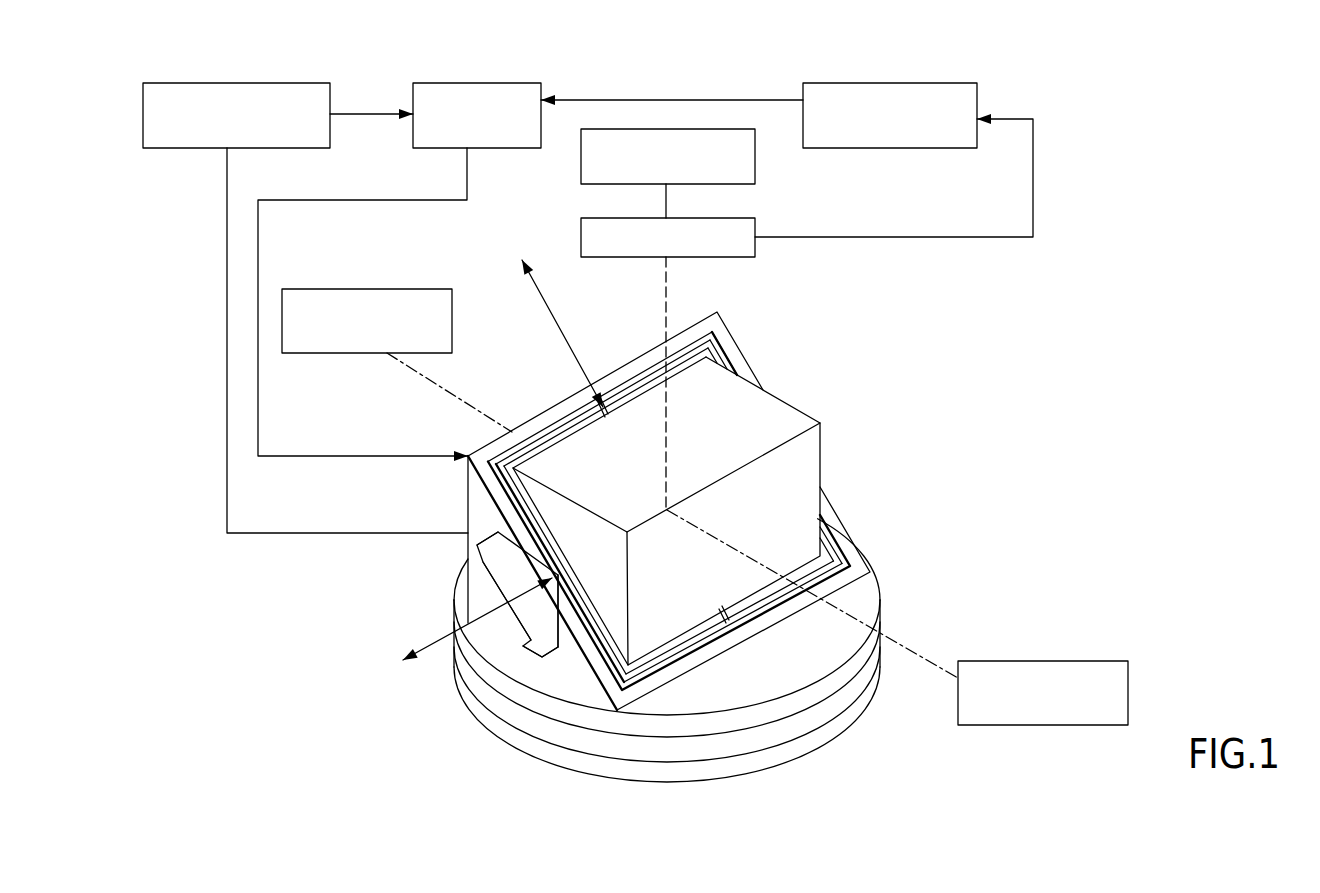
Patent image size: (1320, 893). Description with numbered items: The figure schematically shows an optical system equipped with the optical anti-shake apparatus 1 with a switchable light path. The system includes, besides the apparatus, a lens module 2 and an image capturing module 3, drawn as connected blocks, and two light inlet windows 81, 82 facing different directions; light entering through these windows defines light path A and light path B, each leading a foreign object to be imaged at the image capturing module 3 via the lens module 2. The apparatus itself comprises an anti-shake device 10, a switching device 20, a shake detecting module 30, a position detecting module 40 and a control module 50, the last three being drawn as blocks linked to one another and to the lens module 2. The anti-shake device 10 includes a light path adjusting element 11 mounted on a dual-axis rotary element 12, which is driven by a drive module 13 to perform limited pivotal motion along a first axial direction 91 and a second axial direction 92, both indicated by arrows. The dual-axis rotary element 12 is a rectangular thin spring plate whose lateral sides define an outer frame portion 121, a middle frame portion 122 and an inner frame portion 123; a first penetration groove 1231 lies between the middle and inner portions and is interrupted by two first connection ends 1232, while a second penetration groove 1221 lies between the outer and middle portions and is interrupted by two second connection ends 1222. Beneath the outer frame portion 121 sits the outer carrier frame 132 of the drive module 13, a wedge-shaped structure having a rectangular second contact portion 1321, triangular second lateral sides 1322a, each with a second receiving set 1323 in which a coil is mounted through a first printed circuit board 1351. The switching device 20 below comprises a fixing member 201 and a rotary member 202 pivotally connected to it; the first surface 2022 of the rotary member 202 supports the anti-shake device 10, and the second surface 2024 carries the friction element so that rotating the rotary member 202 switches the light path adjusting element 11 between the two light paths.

The optical anti-shake apparatus with a switchable light path 1 is at (843, 427).
The lens module 2 is at (755, 222).
The image capturing module 3 is at (755, 157).
The anti-shake device 10 is at (753, 352).
The light path adjusting element 11 is at (783, 407).
The dual-axis rotary element 12 is at (833, 510).
The drive module 13 is at (455, 500).
The switching device 20 is at (887, 563).
The shake detecting module 30 is at (912, 83).
The position detecting module 40 is at (290, 83).
The control module 50 is at (500, 83).
The light inlet window 81 is at (1050, 661).
The light inlet window 82 is at (330, 353).
The first axial direction 91 is at (543, 293).
The second axial direction 92 is at (445, 655).
The outer frame portion 121 is at (840, 577).
The middle frame portion 122 is at (837, 577).
The inner frame portion 123 is at (627, 708).
The outer carrier frame 132 is at (473, 597).
The fixing member 201 is at (823, 742).
The rotary member 202 is at (880, 622).
The second penetration groove 1221 is at (622, 390).
The second connection end 1222 is at (538, 663).
The first penetration groove 1231 is at (650, 385).
The first connection end 1232 is at (603, 410).
The second contact portion 1321 is at (583, 683).
The second lateral side 1322a is at (580, 687).
The second receiving set 1323 is at (503, 620).
The first printed circuit board 1351 is at (495, 573).
The first surface 2022 is at (868, 583).
The second surface 2024 is at (880, 640).